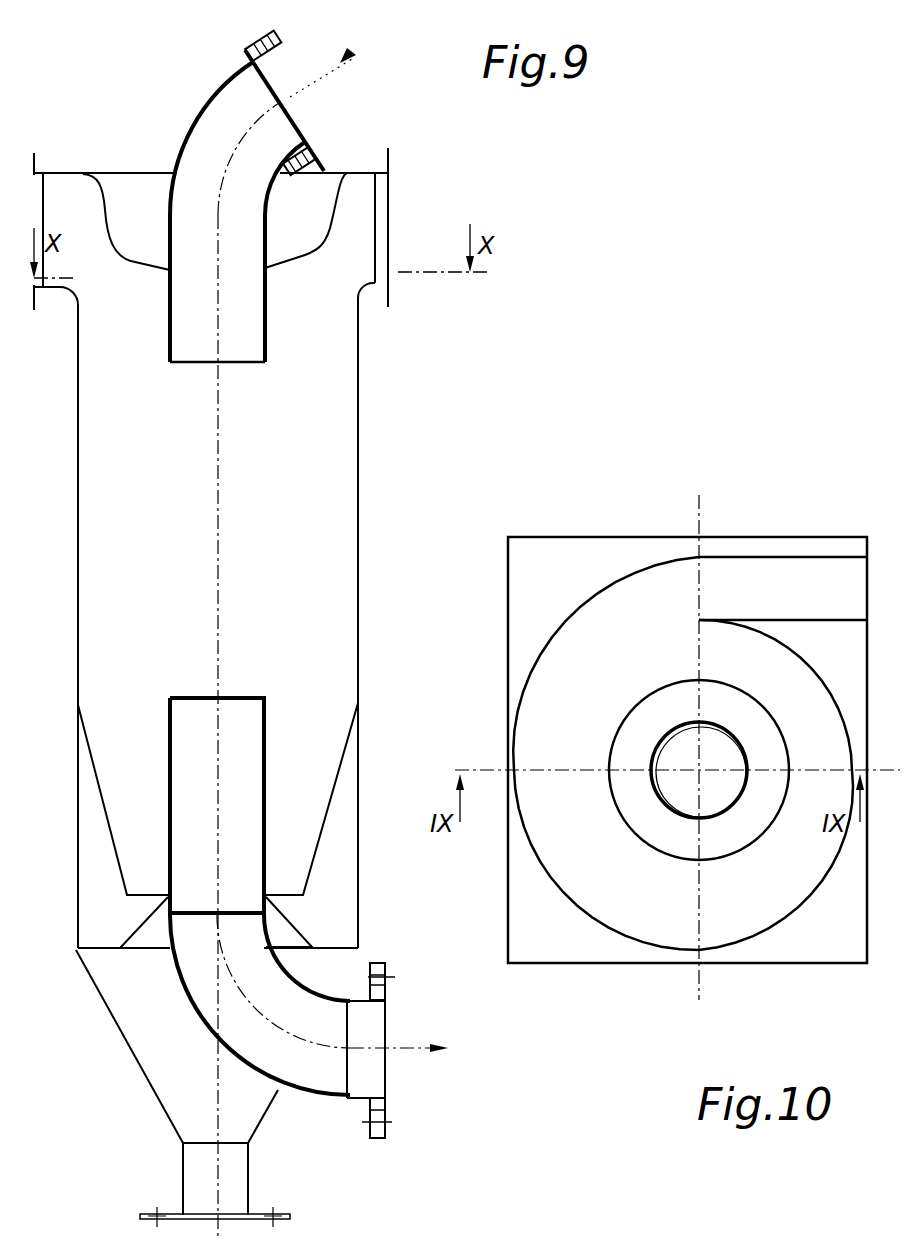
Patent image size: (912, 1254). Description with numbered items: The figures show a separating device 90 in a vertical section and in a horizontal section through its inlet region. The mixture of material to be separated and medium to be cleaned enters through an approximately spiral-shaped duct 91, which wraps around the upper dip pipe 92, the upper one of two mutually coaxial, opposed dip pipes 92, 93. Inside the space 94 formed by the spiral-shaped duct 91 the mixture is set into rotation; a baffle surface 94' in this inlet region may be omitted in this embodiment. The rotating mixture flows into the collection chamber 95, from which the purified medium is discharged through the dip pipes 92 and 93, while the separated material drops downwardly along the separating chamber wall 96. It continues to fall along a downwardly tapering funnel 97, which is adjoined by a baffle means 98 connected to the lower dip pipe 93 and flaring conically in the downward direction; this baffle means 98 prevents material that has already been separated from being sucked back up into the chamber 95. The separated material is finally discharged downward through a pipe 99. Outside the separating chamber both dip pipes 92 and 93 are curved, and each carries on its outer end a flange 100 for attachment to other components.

In FIG. 9, the separating device 90 is at (408, 397).
In FIG. 10, the separating device 90 is at (768, 478).
In FIG. 10, the spiral-shaped duct 91 is at (855, 590).
In FIG. 9, the upper dip pipe 92 is at (217, 136).
In FIG. 9, the lower dip pipe 93 is at (326, 1080).
In FIG. 9, the space 94 is at (105, 217).
In FIG. 10, the space 94 is at (683, 798).
In FIG. 9, the baffle surface 94' is at (367, 227).
In FIG. 9, the collection chamber 95 is at (317, 522).
In FIG. 9, the separating chamber wall 96 is at (358, 581).
In FIG. 9, the funnel 97 is at (335, 781).
In FIG. 9, the baffle means 98 is at (302, 935).
In FIG. 9, the pipe 99 is at (198, 1177).
In FIG. 9, the flanges 100 is at (254, 54).